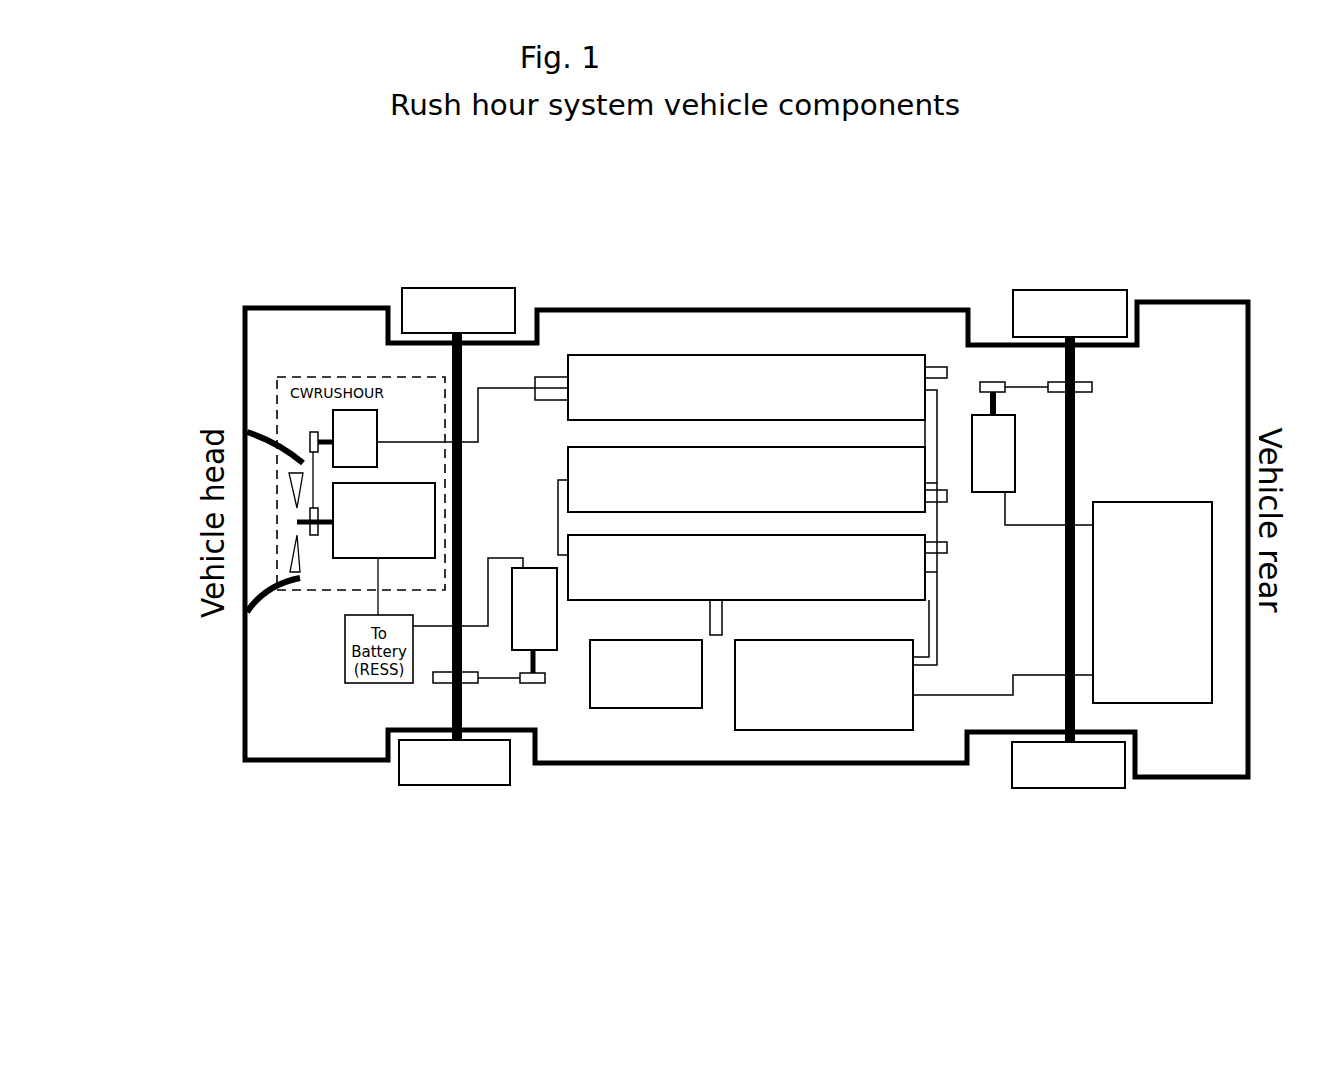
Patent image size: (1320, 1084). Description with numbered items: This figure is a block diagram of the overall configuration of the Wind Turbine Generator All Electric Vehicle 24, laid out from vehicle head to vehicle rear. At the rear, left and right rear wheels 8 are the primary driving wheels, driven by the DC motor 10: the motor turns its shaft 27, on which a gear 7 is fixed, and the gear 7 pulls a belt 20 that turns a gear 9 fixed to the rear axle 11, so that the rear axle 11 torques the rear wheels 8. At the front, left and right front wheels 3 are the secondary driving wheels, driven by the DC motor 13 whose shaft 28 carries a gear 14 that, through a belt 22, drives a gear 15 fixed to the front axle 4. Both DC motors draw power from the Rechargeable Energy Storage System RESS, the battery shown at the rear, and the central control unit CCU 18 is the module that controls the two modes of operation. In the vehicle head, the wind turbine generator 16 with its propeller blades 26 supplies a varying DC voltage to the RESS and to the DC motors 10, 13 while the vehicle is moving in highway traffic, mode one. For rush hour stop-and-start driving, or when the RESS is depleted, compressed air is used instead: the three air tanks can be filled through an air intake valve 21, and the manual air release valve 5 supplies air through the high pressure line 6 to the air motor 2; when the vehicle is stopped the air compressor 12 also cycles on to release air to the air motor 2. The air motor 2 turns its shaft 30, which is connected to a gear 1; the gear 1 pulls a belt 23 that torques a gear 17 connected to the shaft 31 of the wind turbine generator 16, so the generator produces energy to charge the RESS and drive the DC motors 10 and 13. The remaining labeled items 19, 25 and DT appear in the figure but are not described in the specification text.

The gear 1 is at (302, 432).
The air motor 2 is at (352, 408).
The front wheels 3 is at (478, 277).
The front axle 4 is at (465, 378).
The manual air release valve 5 is at (553, 370).
The high pressure line 6 is at (515, 386).
The gear 7 is at (992, 378).
The rear wheels 8 is at (1070, 268).
The gear 9 is at (1095, 378).
The DC motor 10 is at (1013, 440).
The rear axle 11 is at (1063, 620).
The air compressor 12 is at (808, 735).
The DC motor 13 is at (548, 658).
The gear 14 is at (534, 688).
The gear 15 is at (432, 686).
The wind turbine generator 16 is at (343, 563).
The gear 17 is at (327, 532).
The central control unit CCU 18 is at (643, 712).
The air tank valves 19 is at (932, 537).
The belt 20 is at (1027, 380).
The air intake valve 21 is at (715, 640).
The belt 22 is at (498, 686).
The belt 23 is at (307, 457).
The Wind Turbine Generator All Electric Vehicle 24 is at (1166, 782).
The electric wiring 25 is at (491, 556).
The propeller blades 26 is at (285, 488).
The shaft 27 is at (1003, 400).
The shaft 28 is at (525, 660).
The shaft 30 is at (323, 428).
The shaft 31 is at (308, 540).
The air duct DT is at (244, 608).
The Rechargeable Energy Storage System RESS is at (1172, 710).